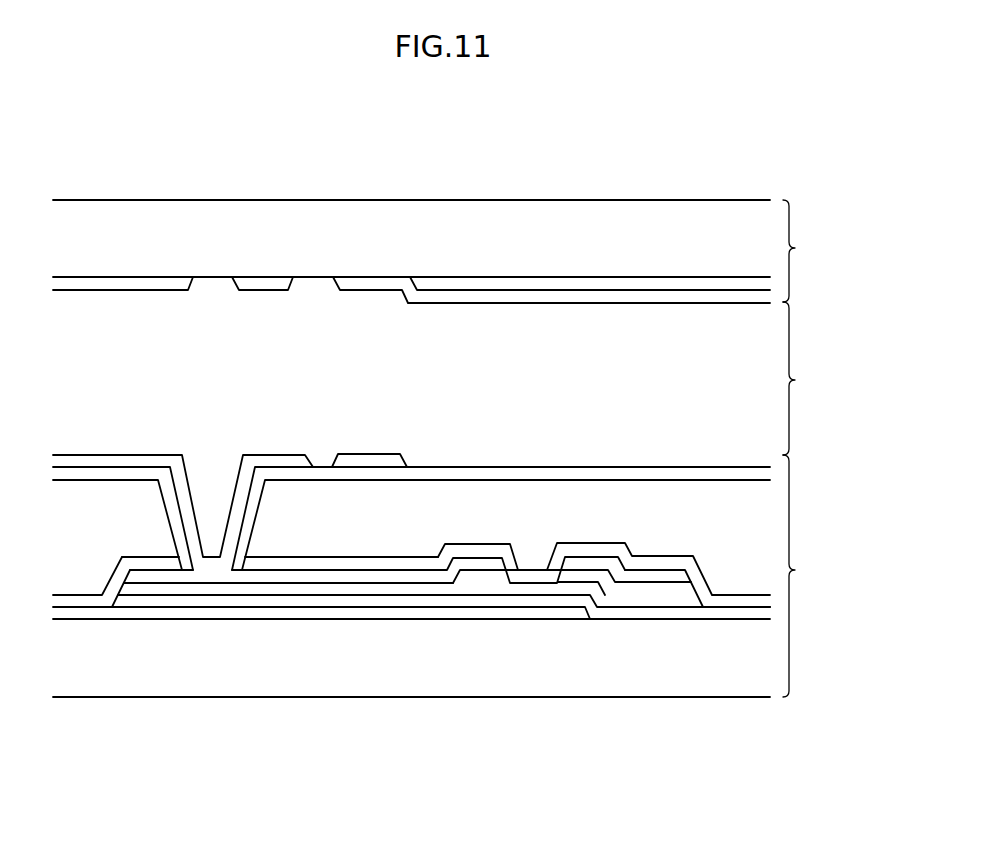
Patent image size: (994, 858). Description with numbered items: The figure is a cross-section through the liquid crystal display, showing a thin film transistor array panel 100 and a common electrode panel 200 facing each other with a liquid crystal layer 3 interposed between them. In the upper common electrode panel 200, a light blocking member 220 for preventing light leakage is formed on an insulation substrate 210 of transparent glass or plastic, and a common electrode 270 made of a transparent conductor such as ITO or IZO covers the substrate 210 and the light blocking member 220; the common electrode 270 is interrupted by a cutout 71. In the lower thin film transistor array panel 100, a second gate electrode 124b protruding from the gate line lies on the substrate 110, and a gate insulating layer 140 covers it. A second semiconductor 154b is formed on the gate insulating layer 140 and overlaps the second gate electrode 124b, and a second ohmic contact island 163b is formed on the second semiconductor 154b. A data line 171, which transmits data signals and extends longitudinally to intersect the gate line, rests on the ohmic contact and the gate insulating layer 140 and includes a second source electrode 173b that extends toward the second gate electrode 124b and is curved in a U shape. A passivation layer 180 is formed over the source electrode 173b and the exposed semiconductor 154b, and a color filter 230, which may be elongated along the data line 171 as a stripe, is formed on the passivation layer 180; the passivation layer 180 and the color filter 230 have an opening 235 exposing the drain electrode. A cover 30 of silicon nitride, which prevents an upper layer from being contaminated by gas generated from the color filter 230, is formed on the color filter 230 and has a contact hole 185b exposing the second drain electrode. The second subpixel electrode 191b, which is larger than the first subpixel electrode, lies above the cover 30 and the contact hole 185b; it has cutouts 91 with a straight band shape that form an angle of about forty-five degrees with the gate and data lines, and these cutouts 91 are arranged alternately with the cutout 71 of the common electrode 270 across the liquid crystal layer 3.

The insulation substrate 210 is at (277, 224).
The common electrode 270 is at (131, 282).
The light blocking member 220 is at (511, 284).
The cutout 71 is at (190, 283).
The common electrode panel 200 is at (811, 251).
The liquid crystal layer 3 is at (799, 378).
The thin film transistor array panel 100 is at (811, 576).
The second subpixel electrode 191b is at (118, 462).
The contact hole 185b is at (215, 490).
The opening 235 is at (243, 513).
The cutout 91 is at (333, 462).
The cover 30 is at (543, 471).
The color filter 230 is at (93, 571).
The passivation layer 180 is at (170, 603).
The gate insulating layer 140 is at (250, 613).
The substrate 110 is at (305, 682).
The second gate electrode 124b is at (528, 614).
The second semiconductor 154b is at (570, 589).
The ohmic contact 163b is at (637, 589).
The second source electrode 173b is at (585, 562).
The data line 171 is at (675, 578).